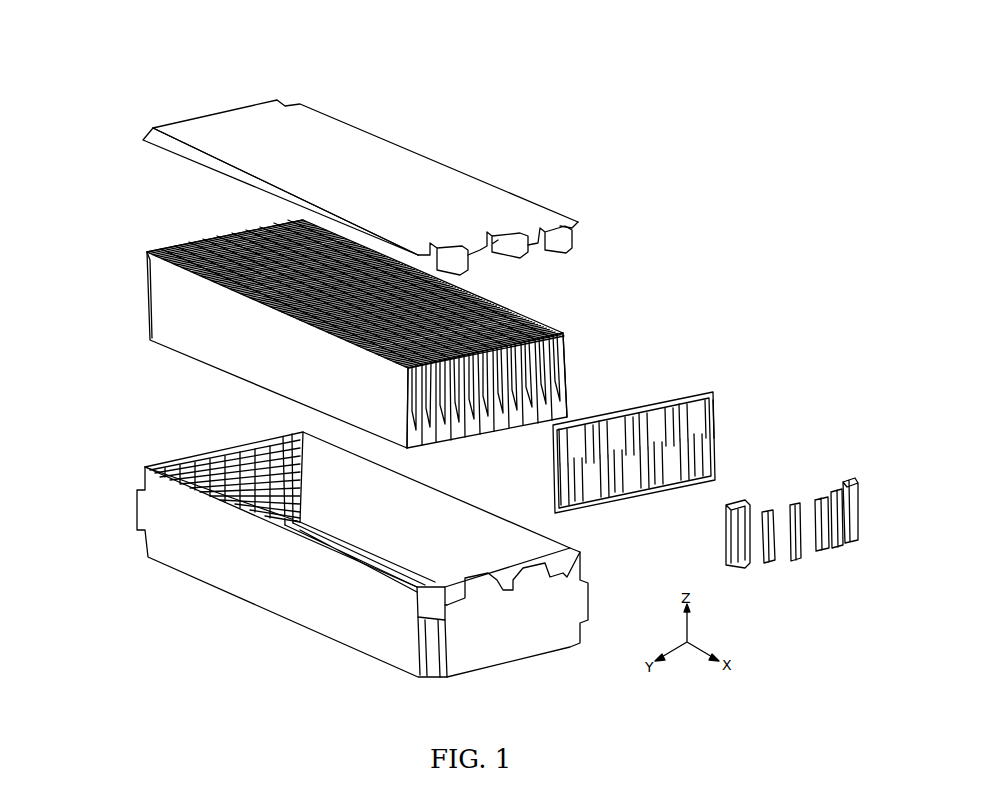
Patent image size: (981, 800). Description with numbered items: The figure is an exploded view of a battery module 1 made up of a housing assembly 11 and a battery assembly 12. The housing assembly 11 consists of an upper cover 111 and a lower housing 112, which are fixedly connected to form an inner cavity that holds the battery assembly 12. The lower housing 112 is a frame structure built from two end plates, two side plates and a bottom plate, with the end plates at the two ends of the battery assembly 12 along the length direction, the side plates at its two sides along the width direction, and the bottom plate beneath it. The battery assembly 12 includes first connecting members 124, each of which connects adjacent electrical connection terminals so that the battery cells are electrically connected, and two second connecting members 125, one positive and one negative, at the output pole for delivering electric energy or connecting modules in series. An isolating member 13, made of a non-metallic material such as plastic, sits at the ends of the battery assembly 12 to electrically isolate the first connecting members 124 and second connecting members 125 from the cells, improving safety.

The battery module 1 is at (220, 76).
The housing assembly 11 is at (80, 120).
The upper cover 111 is at (150, 131).
The lower housing 112 is at (145, 470).
The battery assembly 12 is at (527, 315).
The isolating member 13 is at (666, 400).
The first connecting members 124 is at (793, 555).
The second connecting members 125 is at (855, 530).